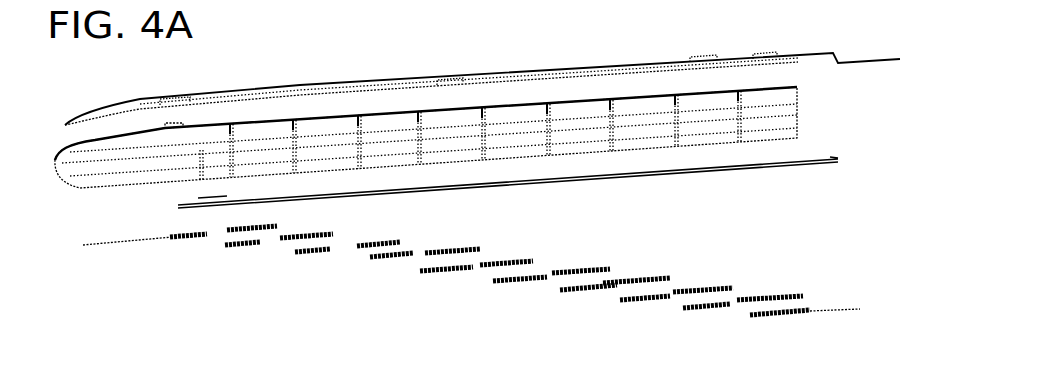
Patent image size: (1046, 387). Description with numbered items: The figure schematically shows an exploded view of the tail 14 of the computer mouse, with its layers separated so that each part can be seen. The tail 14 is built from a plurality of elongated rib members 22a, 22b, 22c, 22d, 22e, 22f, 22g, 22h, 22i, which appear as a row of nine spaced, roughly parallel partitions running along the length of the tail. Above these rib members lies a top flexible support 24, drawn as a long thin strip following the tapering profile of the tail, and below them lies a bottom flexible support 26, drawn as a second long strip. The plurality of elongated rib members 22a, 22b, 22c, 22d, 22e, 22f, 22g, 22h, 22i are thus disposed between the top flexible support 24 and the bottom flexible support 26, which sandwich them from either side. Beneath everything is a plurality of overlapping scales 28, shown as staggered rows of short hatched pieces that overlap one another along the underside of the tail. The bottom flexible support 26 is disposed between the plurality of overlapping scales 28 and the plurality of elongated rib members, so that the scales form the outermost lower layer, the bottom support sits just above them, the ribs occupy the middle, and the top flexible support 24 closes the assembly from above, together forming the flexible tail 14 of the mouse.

The tail 14 is at (283, 62).
The elongated rib member 22a is at (760, 85).
The elongated rib member 22b is at (693, 88).
The elongated rib member 22c is at (627, 95).
The elongated rib member 22d is at (569, 85).
The elongated rib member 22e is at (492, 105).
The elongated rib member 22f is at (430, 108).
The elongated rib member 22g is at (368, 112).
The elongated rib member 22h is at (300, 118).
The elongated rib member 22i is at (237, 127).
The top flexible support 24 is at (545, 67).
The bottom flexible support 26 is at (765, 168).
The overlapping scales 28 is at (432, 300).